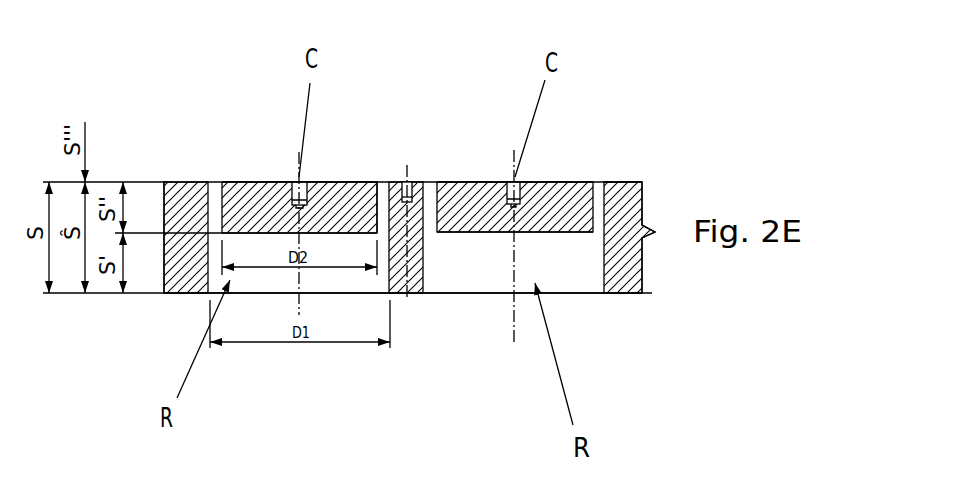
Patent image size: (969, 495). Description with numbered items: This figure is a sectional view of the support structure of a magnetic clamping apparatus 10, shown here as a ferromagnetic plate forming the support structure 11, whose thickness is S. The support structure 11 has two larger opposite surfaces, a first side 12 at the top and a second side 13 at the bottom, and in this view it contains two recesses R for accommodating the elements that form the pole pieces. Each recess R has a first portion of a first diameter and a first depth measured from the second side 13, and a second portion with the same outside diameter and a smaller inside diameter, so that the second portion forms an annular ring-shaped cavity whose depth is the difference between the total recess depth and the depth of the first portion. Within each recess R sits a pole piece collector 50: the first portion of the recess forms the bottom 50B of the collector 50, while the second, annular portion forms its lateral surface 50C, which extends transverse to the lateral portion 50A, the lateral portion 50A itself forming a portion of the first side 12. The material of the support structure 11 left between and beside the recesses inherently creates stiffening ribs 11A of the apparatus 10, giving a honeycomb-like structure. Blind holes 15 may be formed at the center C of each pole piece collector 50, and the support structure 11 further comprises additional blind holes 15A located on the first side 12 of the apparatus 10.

The magnetic clamping apparatus 10 is at (684, 172).
The support structure 11 is at (180, 277).
The stiffening ribs 11A is at (416, 275).
The first side 12 is at (628, 140).
The second side 13 is at (403, 312).
The blind holes 15 is at (282, 155).
The additional blind holes 15A is at (410, 165).
The pole piece collector 50 is at (238, 205).
The lateral portion 50A is at (350, 183).
The bottom 50B is at (265, 235).
The lateral surface 50C is at (370, 233).